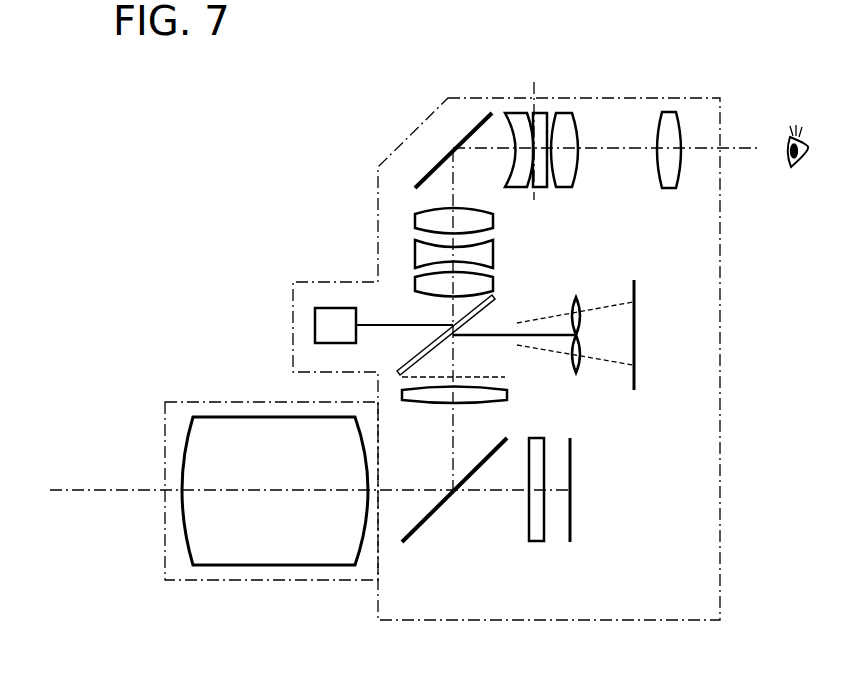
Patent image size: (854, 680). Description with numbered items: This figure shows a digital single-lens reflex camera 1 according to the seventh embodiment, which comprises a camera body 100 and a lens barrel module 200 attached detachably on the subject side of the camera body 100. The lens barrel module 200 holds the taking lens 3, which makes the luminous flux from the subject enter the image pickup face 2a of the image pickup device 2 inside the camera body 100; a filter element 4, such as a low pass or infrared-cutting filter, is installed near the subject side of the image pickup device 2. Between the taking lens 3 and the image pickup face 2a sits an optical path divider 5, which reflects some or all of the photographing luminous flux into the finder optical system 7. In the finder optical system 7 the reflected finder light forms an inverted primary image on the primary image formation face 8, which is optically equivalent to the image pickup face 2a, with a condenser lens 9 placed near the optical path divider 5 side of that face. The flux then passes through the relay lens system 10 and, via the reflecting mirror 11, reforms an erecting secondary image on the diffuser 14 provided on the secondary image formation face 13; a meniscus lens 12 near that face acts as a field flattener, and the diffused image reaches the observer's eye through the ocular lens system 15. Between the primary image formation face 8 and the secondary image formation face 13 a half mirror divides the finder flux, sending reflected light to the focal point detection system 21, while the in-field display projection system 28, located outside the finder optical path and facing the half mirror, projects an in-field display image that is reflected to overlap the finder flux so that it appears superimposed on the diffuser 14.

The single-lens reflex camera 1 is at (195, 253).
The image pickup device 2 is at (593, 521).
The image pickup face 2a is at (562, 525).
The taking lens 3 is at (243, 417).
The filter element 4 is at (537, 542).
The optical path divider 5 is at (413, 527).
The finder optical system 7 is at (352, 178).
The primary image formation face 8 is at (505, 372).
The condenser lens 9 is at (480, 401).
The relay lens system 10 is at (395, 208).
The reflecting mirror 11 is at (430, 160).
The meniscus lens 12 is at (507, 130).
The secondary image formation face 13 is at (535, 83).
The diffuser 14 is at (548, 113).
The ocular lens system 15 is at (678, 128).
The focal point detection system 21 is at (645, 287).
The in-field display projection system 28 is at (313, 327).
The camera body 100 is at (721, 325).
The lens barrel module 200 is at (165, 432).